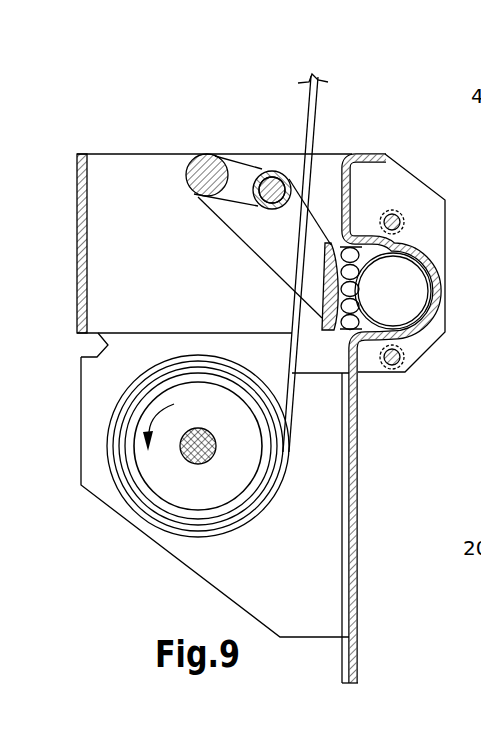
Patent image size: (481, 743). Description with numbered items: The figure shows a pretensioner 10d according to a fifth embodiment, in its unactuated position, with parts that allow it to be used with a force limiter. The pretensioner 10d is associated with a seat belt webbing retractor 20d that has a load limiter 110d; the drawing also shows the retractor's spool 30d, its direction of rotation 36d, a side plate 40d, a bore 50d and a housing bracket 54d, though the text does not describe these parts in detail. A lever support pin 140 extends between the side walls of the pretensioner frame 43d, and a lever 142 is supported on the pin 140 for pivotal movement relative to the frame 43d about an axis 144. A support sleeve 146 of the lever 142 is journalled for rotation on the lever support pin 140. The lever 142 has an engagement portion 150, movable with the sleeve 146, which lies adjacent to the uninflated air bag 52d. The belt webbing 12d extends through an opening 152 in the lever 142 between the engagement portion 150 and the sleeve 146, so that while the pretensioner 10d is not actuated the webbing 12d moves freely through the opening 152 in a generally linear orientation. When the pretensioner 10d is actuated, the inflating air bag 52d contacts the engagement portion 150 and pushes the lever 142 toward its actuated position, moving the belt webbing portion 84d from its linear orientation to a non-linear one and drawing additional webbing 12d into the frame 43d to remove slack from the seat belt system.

The pretensioner 10d is at (112, 574).
The belt webbing 12d is at (326, 101).
The seat belt webbing retractor 20d is at (72, 432).
The supply roll / drum 30d is at (171, 497).
The rotation direction 36d is at (170, 410).
The side wall plate 40d is at (367, 605).
The pretensioner frame 43d is at (70, 293).
The bushing bore 50d is at (419, 330).
The air bag 52d is at (352, 332).
The housing bracket 54d is at (408, 275).
The belt webbing portion 84d is at (252, 337).
The load limiter 110d is at (214, 456).
The lever support pin 140 is at (268, 186).
The lever 142 is at (204, 223).
The axis 144 is at (244, 213).
The support sleeve 146 is at (258, 182).
The engagement portion 150 is at (327, 286).
The opening 152 is at (289, 228).